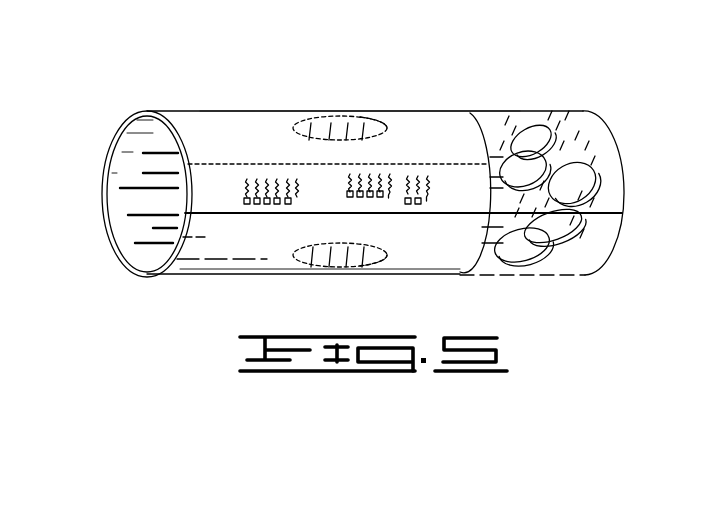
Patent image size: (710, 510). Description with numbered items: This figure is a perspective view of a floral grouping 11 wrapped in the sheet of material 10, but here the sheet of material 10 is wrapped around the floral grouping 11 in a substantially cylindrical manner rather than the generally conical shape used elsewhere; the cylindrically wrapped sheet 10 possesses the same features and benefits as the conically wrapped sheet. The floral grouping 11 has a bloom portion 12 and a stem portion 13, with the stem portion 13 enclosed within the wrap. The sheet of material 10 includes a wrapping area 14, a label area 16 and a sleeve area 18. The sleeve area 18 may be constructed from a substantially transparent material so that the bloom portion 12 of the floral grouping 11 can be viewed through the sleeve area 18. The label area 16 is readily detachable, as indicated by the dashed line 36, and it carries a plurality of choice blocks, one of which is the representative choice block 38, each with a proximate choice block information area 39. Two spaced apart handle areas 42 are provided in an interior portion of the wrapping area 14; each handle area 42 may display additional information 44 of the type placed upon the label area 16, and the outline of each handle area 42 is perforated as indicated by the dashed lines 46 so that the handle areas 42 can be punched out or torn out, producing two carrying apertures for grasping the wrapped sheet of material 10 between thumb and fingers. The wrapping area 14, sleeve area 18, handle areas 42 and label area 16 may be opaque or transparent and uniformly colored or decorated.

The sheet of material 10 is at (178, 108).
The floral grouping 11 is at (598, 168).
The bloom portion 12 is at (543, 132).
The stem portion 13 is at (130, 190).
The wrapping area 14 is at (256, 130).
The label area 16 is at (217, 183).
The sleeve area 18 is at (618, 197).
The dashed line 36 is at (447, 160).
The choice block 38 is at (247, 205).
The choice block information area 39 is at (247, 187).
The handle area 42 is at (303, 128).
The additional information 44 is at (330, 133).
The dashed lines 46 is at (377, 112).